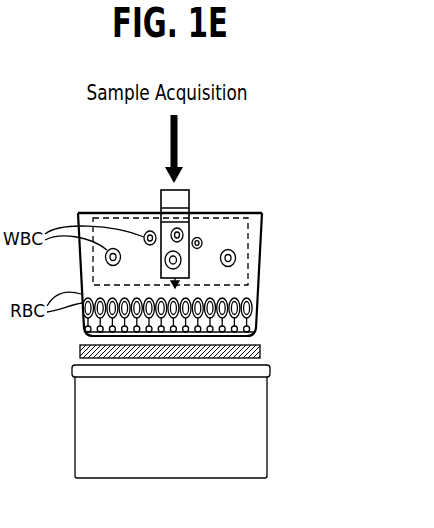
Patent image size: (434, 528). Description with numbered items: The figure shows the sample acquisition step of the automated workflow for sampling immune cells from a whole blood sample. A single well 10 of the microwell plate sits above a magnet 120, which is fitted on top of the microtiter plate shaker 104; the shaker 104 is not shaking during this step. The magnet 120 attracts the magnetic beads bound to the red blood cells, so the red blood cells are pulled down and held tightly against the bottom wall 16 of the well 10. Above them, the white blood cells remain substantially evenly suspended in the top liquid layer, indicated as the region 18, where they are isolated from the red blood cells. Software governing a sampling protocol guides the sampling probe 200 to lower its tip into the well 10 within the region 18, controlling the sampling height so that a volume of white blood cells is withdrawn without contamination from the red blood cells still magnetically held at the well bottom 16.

The well 10 is at (261, 277).
The bottom wall 16 is at (248, 338).
The region 18 is at (248, 228).
The sampling probe 200 is at (189, 200).
The magnet 120 is at (261, 352).
The microtiter plate shaker 104 is at (267, 441).